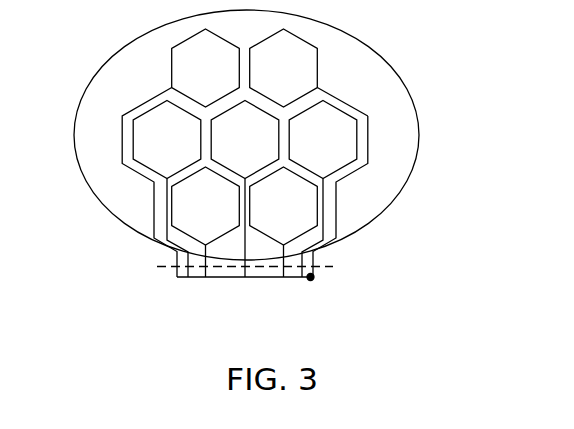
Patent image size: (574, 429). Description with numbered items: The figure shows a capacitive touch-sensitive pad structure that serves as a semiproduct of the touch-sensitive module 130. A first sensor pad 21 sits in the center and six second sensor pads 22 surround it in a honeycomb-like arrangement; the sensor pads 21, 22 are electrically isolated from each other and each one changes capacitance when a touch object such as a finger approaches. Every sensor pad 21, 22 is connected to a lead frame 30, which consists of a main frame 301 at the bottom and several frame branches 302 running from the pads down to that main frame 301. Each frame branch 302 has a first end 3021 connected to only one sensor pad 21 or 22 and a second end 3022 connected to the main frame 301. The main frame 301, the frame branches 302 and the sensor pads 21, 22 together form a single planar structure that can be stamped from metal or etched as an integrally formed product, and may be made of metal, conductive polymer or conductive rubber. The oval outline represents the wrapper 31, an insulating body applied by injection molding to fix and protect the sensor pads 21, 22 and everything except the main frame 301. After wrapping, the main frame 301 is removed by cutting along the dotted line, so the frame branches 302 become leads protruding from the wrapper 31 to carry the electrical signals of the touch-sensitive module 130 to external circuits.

The capacitive touch-sensitive module 130 is at (119, 238).
The wrapper 31 is at (403, 97).
The second sensor pad 22 is at (245, 137).
The first sensor pad 21 is at (245, 140).
The lead frame 30 is at (490, 197).
The frame branch 302 is at (334, 201).
The first end 3021 is at (317, 88).
The main frame 301 is at (300, 280).
The second end 3022 is at (312, 277).